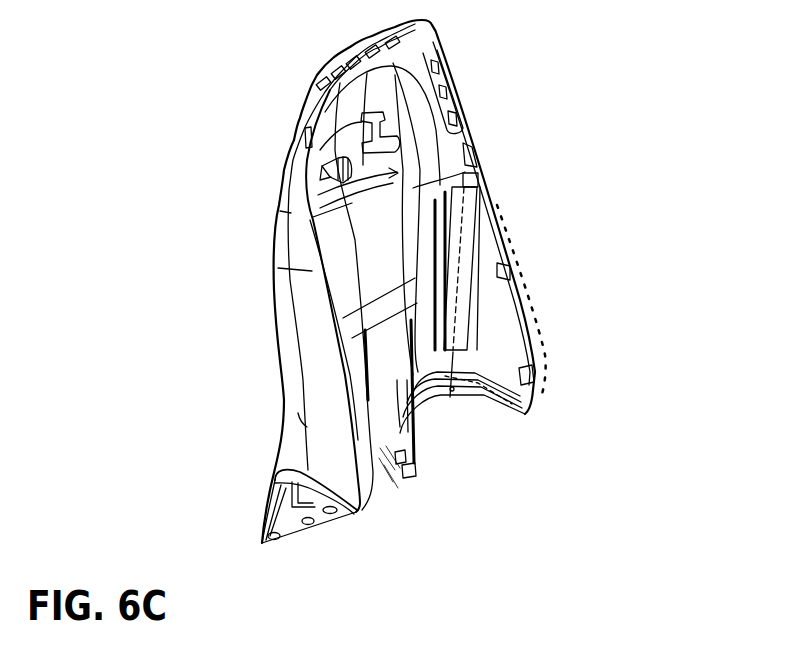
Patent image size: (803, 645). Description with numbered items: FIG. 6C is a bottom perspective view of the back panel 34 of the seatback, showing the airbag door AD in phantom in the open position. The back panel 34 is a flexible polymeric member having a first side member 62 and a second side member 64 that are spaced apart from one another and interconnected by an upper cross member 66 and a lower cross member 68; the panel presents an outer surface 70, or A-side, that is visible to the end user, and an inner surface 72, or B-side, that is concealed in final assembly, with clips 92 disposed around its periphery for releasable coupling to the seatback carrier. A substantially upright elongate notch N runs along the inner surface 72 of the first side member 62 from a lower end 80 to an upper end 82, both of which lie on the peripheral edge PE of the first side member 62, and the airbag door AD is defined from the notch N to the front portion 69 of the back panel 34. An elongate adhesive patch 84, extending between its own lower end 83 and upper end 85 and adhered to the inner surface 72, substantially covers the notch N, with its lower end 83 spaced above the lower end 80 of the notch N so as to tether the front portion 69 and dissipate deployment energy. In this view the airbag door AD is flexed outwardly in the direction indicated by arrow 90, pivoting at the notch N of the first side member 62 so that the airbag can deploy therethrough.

The back panel 34 is at (258, 139).
The first side member 62 is at (487, 197).
The second side member 64 is at (290, 323).
The upper cross member 66 is at (350, 91).
The lower cross member 68 is at (338, 508).
The front portion 69 is at (530, 392).
The outer surface 70 is at (315, 384).
The inner surface 72 is at (503, 337).
The lower end 80 is at (453, 393).
The upper end 82 is at (473, 147).
The lower end 83 is at (433, 403).
The adhesive patch 84 is at (480, 228).
The upper end 85 is at (507, 215).
The arrow 90 is at (560, 239).
The clips 92 is at (483, 188).
The notch N is at (467, 363).
The peripheral edge PE is at (468, 398).
The airbag door AD is at (493, 308).